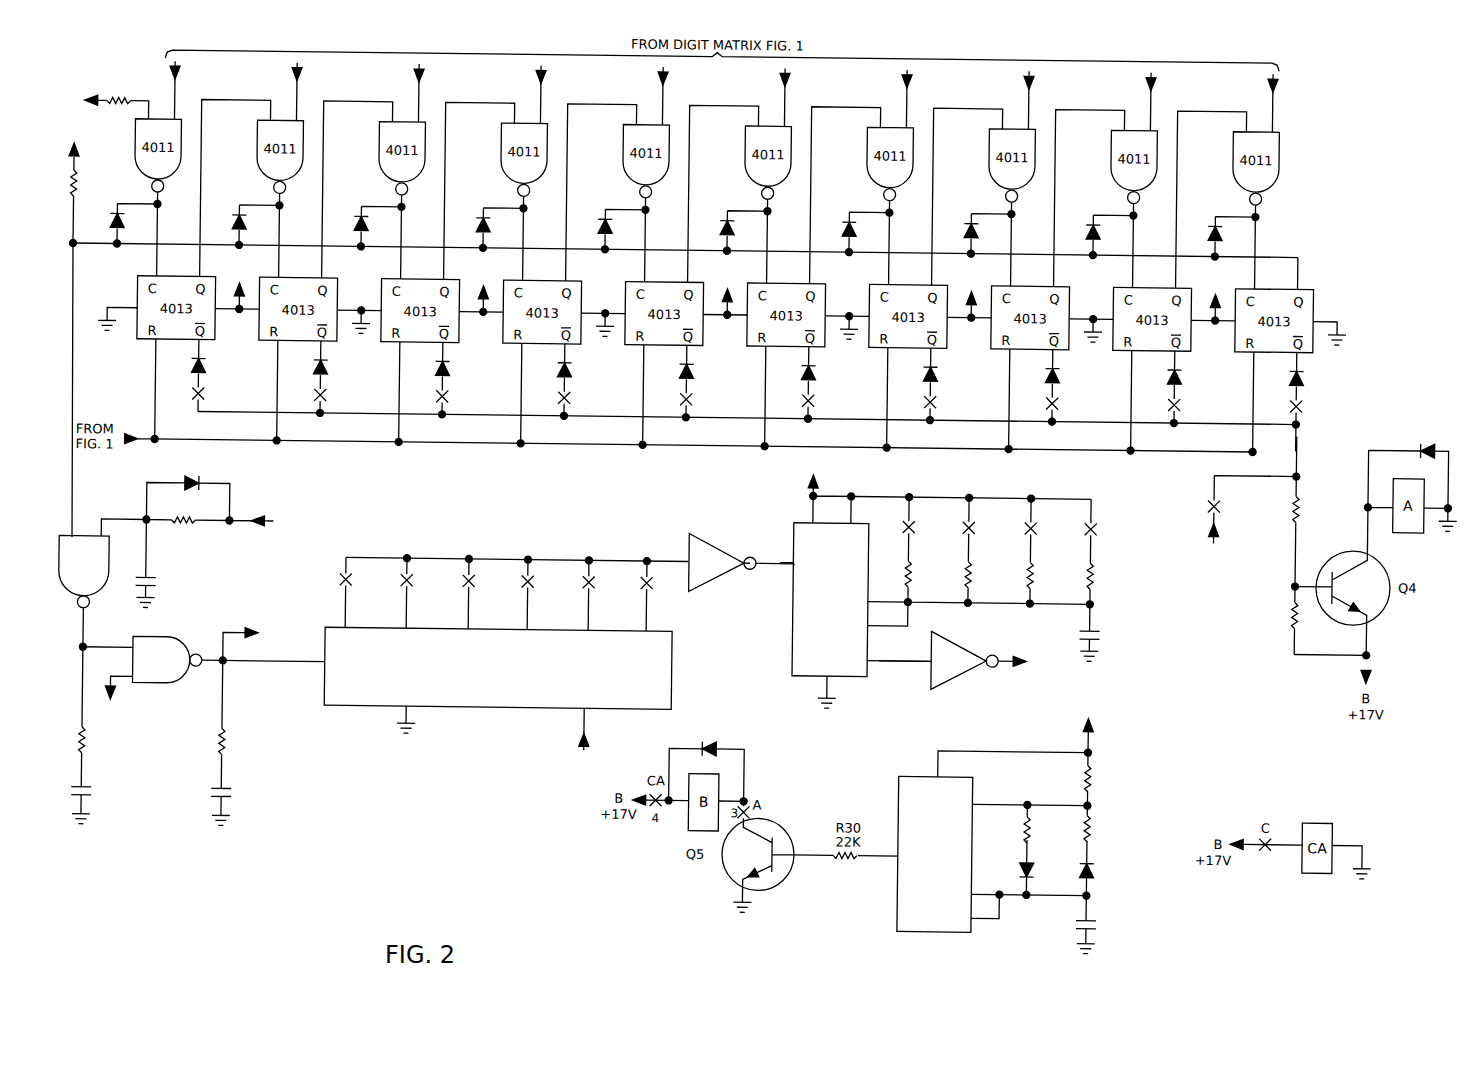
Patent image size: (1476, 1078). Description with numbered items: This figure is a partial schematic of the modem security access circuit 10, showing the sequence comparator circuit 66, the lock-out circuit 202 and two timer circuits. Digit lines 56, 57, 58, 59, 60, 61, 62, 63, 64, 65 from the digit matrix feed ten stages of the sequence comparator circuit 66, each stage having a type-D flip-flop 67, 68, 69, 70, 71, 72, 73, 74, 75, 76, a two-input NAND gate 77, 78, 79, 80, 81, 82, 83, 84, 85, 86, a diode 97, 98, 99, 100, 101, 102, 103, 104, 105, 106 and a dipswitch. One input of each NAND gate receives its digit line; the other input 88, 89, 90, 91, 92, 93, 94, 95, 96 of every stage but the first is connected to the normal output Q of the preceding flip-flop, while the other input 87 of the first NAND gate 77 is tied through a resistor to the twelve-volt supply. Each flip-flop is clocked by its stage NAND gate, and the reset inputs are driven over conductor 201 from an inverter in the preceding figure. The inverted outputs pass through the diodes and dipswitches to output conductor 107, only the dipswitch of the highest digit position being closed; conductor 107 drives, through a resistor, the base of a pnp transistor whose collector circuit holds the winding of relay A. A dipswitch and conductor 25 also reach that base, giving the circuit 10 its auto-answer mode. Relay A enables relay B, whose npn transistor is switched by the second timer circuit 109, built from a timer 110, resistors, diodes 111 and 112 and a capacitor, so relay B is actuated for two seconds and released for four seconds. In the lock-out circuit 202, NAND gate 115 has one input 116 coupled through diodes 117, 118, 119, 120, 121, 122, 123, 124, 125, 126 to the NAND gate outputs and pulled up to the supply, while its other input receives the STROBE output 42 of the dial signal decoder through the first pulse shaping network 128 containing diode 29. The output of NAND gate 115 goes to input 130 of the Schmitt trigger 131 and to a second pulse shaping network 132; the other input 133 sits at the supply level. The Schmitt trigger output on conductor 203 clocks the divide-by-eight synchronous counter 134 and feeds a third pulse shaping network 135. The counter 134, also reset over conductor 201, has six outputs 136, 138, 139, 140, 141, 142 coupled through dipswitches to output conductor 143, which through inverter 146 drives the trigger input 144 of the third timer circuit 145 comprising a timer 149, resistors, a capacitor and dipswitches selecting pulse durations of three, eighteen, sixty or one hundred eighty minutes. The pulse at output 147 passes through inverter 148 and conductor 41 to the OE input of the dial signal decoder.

The modem security access circuit 10 is at (855, 952).
The conductor 25 is at (1218, 527).
The diode 29 is at (190, 480).
The conductor 41 is at (1013, 660).
The STROBE output 42 is at (250, 518).
The digit line 56 is at (171, 92).
The digit line 57 is at (293, 92).
The digit line 58 is at (415, 92).
The digit line 59 is at (537, 92).
The digit line 60 is at (659, 92).
The digit line 61 is at (781, 92).
The digit line 62 is at (903, 92).
The digit line 63 is at (1025, 92).
The digit line 64 is at (1147, 92).
The digit line 65 is at (1269, 92).
The sequence comparator circuit 66 is at (1277, 214).
The type-D flip-flop 67 is at (206, 276).
The type-D flip-flop 68 is at (328, 276).
The type-D flip-flop 69 is at (450, 276).
The type-D flip-flop 70 is at (572, 276).
The type-D flip-flop 71 is at (694, 276).
The type-D flip-flop 72 is at (816, 276).
The type-D flip-flop 73 is at (938, 276).
The type-D flip-flop 74 is at (1060, 276).
The type-D flip-flop 75 is at (1182, 276).
The type-D flip-flop 76 is at (1304, 276).
The 2-input NAND gate 77 is at (133, 147).
The 2-input NAND gate 78 is at (255, 147).
The 2-input NAND gate 79 is at (377, 147).
The 2-input NAND gate 80 is at (499, 147).
The 2-input NAND gate 81 is at (621, 147).
The 2-input NAND gate 82 is at (743, 147).
The 2-input NAND gate 83 is at (865, 147).
The 2-input NAND gate 84 is at (987, 147).
The 2-input NAND gate 85 is at (1109, 147).
The 2-input NAND gate 86 is at (1231, 147).
The other input of NAND gate 87 is at (146, 107).
The other input of NAND gate 88 is at (229, 96).
The other input of NAND gate 89 is at (351, 96).
The other input of NAND gate 90 is at (473, 96).
The other input of NAND gate 91 is at (595, 96).
The other input of NAND gate 92 is at (717, 96).
The other input of NAND gate 93 is at (839, 96).
The other input of NAND gate 94 is at (961, 96).
The other input of NAND gate 95 is at (1083, 96).
The other input of NAND gate 96 is at (1205, 96).
The diode 97 is at (208, 371).
The diode 98 is at (330, 371).
The diode 99 is at (452, 371).
The diode 100 is at (574, 371).
The diode 101 is at (696, 371).
The diode 102 is at (818, 371).
The diode 103 is at (940, 371).
The diode 104 is at (1062, 371).
The diode 105 is at (1184, 371).
The diode 106 is at (1306, 371).
The output conductor 107 is at (1300, 445).
The second timer circuit 109 is at (1045, 752).
The timer 110 is at (910, 777).
The diode 111 is at (1023, 872).
The diode 112 is at (1093, 870).
The 2-input NAND gate 115 is at (86, 530).
The input of NAND gate 116 is at (75, 362).
The diode 117 is at (112, 220).
The diode 118 is at (234, 220).
The diode 119 is at (356, 220).
The diode 120 is at (478, 220).
The diode 121 is at (600, 220).
The diode 122 is at (722, 220).
The diode 123 is at (844, 220).
The diode 124 is at (966, 220).
The diode 125 is at (1088, 220).
The diode 126 is at (1210, 220).
The first pulse shaping network 128 is at (221, 497).
The input of Schmitt trigger 130 is at (112, 645).
The Schmitt trigger 131 is at (168, 635).
The second pulse shaping network 132 is at (83, 767).
The other input of Schmitt trigger 133 is at (112, 687).
The divide-by-eight synchronous counter 134 is at (673, 653).
The third pulse shaping network 135 is at (223, 767).
The counter output 136 is at (348, 625).
The counter output 138 is at (409, 625).
The counter output 139 is at (471, 625).
The counter output 140 is at (530, 625).
The counter output 141 is at (591, 625).
The counter output 142 is at (649, 625).
The output conductor 143 is at (672, 560).
The trigger input 144 is at (775, 560).
The third timer circuit 145 is at (943, 497).
The inverter 146 is at (718, 577).
The output of third timer circuit 147 is at (905, 665).
The inverter 148 is at (958, 645).
The timer 149 is at (792, 653).
The conductor 201 is at (142, 433).
The lock-out circuit 202 is at (428, 553).
The conductor 203 is at (237, 627).